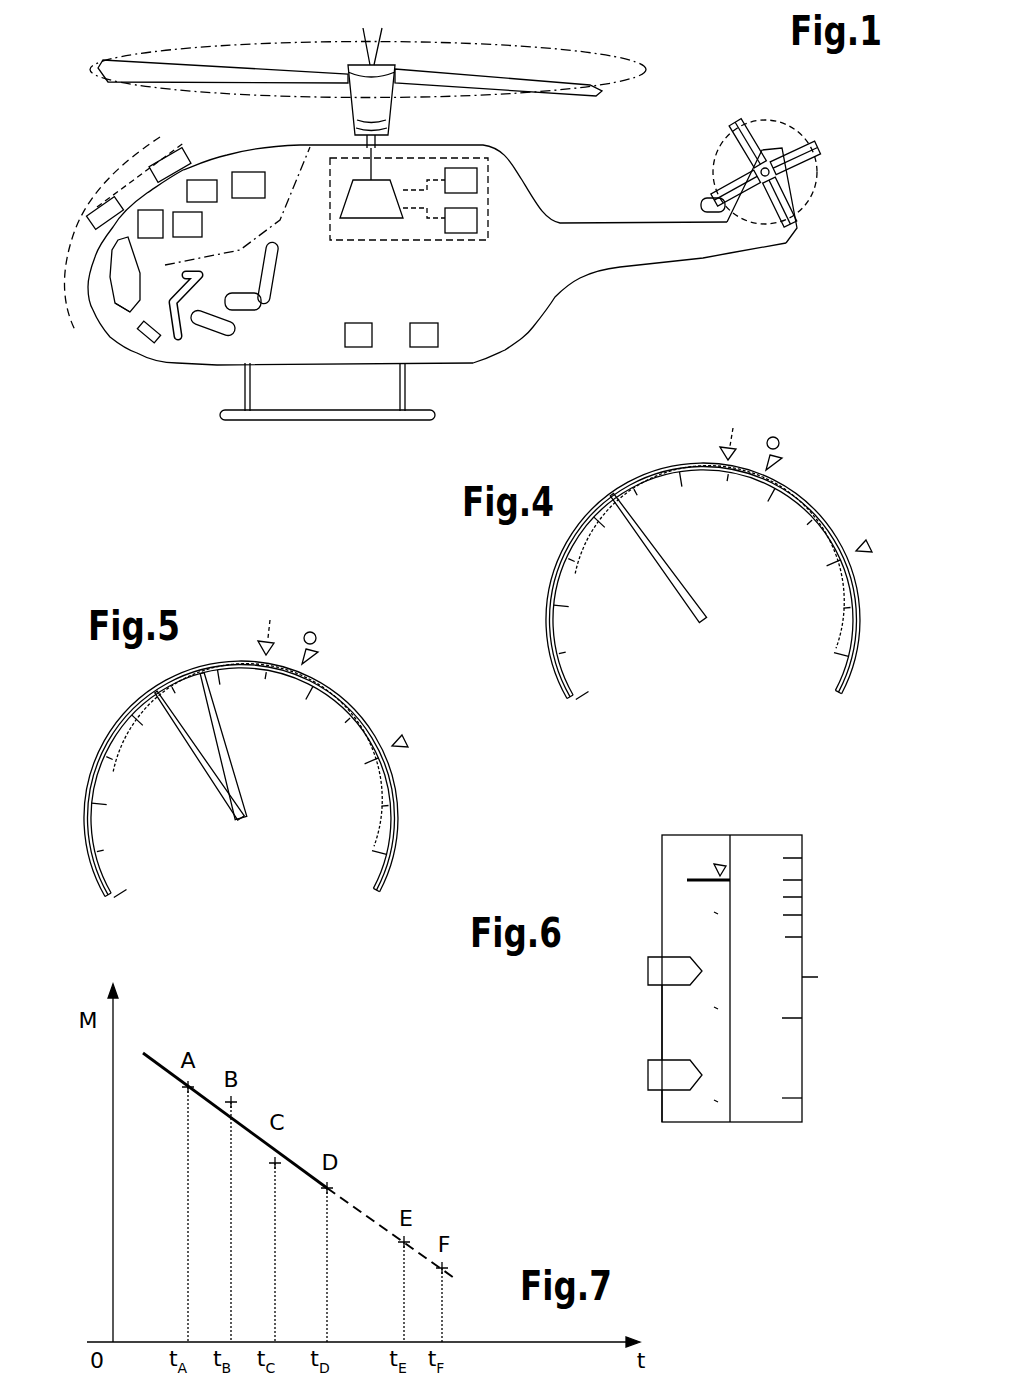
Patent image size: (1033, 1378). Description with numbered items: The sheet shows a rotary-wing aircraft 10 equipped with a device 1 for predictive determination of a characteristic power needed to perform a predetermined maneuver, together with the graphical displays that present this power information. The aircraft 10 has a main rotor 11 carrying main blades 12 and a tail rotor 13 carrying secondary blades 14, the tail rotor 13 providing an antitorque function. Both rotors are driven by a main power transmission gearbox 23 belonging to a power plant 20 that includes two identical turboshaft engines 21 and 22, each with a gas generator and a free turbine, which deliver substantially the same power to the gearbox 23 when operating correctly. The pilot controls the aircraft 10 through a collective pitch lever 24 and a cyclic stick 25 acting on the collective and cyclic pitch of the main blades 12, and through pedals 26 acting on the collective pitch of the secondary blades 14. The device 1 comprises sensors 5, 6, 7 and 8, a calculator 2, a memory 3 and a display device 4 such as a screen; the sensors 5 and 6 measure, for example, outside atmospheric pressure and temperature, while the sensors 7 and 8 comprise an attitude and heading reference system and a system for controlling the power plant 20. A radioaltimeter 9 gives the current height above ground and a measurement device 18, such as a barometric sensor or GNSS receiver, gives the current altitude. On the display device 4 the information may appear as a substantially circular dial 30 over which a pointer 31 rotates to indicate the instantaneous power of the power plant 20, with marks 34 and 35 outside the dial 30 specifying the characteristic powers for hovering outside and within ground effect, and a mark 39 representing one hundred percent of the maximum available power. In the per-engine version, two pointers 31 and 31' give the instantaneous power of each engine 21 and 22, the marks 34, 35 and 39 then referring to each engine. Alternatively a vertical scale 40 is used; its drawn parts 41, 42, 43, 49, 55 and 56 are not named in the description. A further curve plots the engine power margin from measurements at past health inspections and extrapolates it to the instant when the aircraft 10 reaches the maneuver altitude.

In FIG. 1, the device for predictive determination 1 is at (58, 228).
In FIG. 1, the calculator 2 is at (148, 210).
In FIG. 1, the memory 3 is at (137, 257).
In FIG. 1, the display device 4 is at (143, 285).
In FIG. 1, the sensor 5 is at (90, 200).
In FIG. 1, the sensor 6 is at (185, 152).
In FIG. 1, the sensor 7 is at (197, 180).
In FIG. 1, the sensor 8 is at (268, 185).
In FIG. 1, the radioaltimeter 9 is at (350, 337).
In FIG. 1, the rotary-wing aircraft 10 is at (74, 380).
In FIG. 1, the main rotor 11 is at (600, 52).
In FIG. 1, the main blades 12 is at (145, 62).
In FIG. 1, the tail rotor 13 is at (717, 150).
In FIG. 1, the secondary blades 14 is at (740, 128).
In FIG. 1, the measurement device 18 is at (440, 333).
In FIG. 1, the power plant 20 is at (405, 240).
In FIG. 1, the turboshaft engine 21 is at (487, 182).
In FIG. 1, the turboshaft engine 22 is at (461, 235).
In FIG. 1, the main power transmission gearbox 23 is at (358, 222).
In FIG. 1, the collective pitch lever 24 is at (257, 310).
In FIG. 1, the cyclic stick 25 is at (222, 343).
In FIG. 1, the pedals 26 is at (148, 346).
In FIG. 4, the dial 30 is at (545, 628).
In FIG. 5, the dial 30 is at (95, 868).
In FIG. 4, the pointer 31 is at (658, 571).
In FIG. 5, the pointer 31 is at (200, 767).
In FIG. 5, the pointer 31' is at (256, 746).
In FIG. 4, the mark 34 is at (780, 434).
In FIG. 5, the mark 34 is at (317, 628).
In FIG. 4, the mark 35 is at (733, 428).
In FIG. 5, the mark 35 is at (270, 620).
In FIG. 4, the mark 39 is at (866, 539).
In FIG. 5, the mark 39 is at (404, 736).
In FIG. 6, the vertical scale 40 is at (737, 1135).
In FIG. 6, the arrow indicator 41 is at (721, 975).
In FIG. 6, the lower pointer 42 is at (647, 1072).
In FIG. 6, the upper pointer 43 is at (647, 968).
In FIG. 6, the limit bar 49 is at (687, 880).
In FIG. 6, the left scale column 55 is at (678, 1103).
In FIG. 6, the right scale column 56 is at (802, 1098).